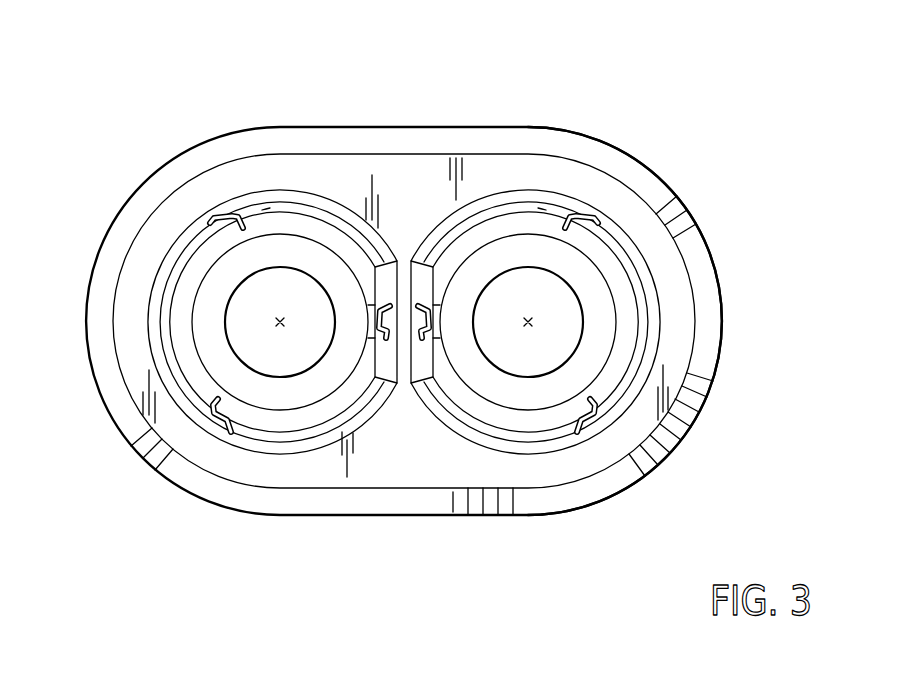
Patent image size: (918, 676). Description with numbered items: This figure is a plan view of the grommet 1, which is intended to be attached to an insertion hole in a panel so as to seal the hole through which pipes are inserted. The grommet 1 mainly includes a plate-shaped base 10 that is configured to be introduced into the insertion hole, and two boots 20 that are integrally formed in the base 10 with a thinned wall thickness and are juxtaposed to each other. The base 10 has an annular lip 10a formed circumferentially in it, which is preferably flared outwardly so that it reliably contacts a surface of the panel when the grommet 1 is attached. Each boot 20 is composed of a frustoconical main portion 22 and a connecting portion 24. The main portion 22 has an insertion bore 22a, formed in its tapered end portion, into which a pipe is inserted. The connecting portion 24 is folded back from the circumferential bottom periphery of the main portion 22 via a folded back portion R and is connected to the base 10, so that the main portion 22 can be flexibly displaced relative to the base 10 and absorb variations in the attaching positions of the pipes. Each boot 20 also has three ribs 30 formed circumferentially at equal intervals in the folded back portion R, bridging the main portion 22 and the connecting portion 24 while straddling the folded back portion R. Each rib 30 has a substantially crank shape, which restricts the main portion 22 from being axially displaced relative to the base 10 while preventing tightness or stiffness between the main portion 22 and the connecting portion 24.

The grommet 1 is at (690, 124).
The base 10 is at (405, 187).
The annular lip 10a is at (711, 313).
The boot 20 is at (348, 50).
The main portion 22 is at (277, 223).
The insertion bore 22a is at (280, 330).
The connecting portion 24 is at (327, 205).
The rib 30 is at (213, 218).
The folded back portion R is at (262, 210).